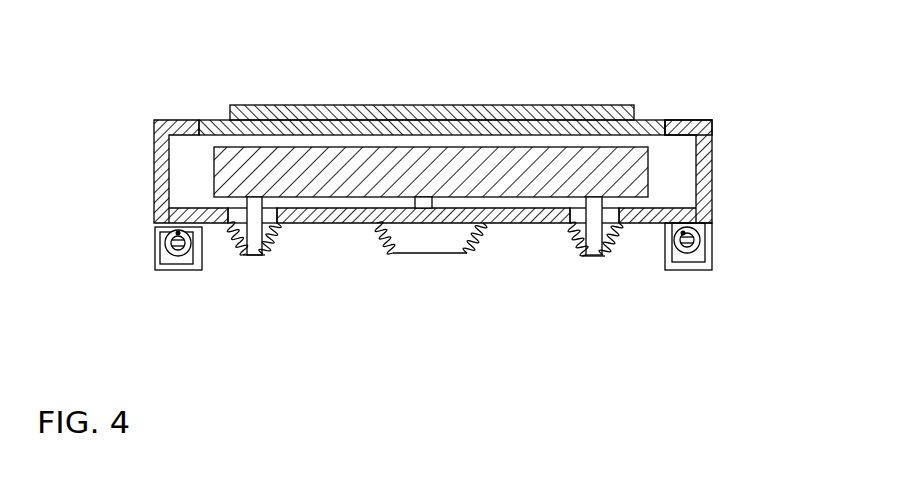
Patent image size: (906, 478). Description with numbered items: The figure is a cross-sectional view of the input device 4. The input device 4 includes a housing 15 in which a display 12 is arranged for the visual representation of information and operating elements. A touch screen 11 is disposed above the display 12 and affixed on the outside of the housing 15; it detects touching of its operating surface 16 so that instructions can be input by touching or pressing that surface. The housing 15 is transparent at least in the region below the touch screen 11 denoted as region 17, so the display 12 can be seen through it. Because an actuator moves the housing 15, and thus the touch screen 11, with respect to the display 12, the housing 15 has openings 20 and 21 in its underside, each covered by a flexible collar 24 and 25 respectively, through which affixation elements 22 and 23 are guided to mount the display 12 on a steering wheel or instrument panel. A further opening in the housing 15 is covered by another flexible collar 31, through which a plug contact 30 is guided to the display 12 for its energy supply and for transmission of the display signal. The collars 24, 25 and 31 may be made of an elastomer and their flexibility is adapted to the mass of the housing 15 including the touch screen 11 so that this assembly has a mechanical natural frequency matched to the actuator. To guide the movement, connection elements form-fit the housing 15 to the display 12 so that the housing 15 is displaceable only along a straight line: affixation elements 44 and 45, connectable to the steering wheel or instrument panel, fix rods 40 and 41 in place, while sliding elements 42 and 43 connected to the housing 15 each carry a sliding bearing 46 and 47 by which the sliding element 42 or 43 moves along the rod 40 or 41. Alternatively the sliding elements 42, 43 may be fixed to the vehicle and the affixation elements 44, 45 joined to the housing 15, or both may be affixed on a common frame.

The input device 4 is at (726, 84).
The touch screen 11 is at (397, 118).
The display 12 is at (465, 165).
The housing 15 is at (697, 118).
The operating surface 16 is at (267, 106).
The region below touch screen 17 is at (217, 120).
The opening 20 is at (270, 218).
The opening 21 is at (609, 218).
The affixation element 22 is at (253, 240).
The affixation element 23 is at (593, 238).
The flexible collar 24 is at (263, 256).
The flexible collar 25 is at (601, 257).
The plug contact 30 is at (423, 203).
The flexible collar 31 is at (447, 237).
The rod 40 is at (177, 243).
The rod 41 is at (688, 240).
The sliding element 42 is at (163, 259).
The sliding element 43 is at (702, 255).
The affixation element 44 is at (173, 267).
The affixation element 45 is at (692, 263).
The sliding bearing 46 is at (178, 233).
The sliding bearing 47 is at (683, 233).